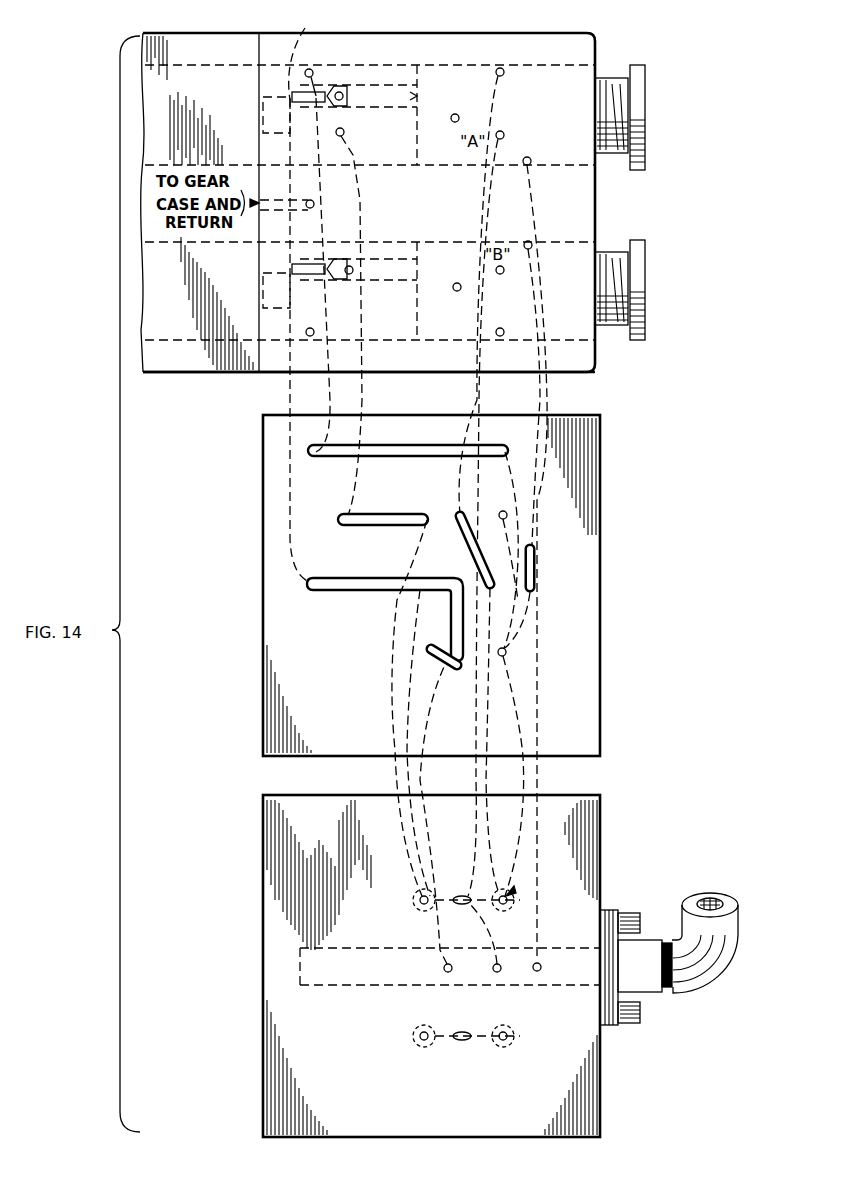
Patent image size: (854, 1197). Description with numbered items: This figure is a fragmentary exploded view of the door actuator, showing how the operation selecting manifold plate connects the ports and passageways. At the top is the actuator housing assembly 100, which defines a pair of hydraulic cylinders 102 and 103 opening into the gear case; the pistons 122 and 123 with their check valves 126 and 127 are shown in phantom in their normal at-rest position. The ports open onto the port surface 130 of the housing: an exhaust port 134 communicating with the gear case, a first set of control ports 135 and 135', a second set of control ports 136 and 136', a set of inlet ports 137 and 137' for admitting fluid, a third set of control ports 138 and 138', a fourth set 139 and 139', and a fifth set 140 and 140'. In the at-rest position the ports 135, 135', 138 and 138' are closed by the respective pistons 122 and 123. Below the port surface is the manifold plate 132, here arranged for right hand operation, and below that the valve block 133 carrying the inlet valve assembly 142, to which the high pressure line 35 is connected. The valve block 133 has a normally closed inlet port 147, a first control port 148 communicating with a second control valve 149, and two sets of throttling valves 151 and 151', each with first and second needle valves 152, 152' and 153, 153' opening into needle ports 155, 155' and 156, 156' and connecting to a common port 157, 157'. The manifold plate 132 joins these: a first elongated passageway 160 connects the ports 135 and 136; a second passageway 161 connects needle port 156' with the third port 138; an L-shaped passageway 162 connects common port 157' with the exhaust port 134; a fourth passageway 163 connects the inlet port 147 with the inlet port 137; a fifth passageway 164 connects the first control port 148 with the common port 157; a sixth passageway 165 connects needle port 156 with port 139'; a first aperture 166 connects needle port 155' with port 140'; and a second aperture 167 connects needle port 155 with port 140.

The actuator housing assembly 100 is at (205, 46).
The check valve 126 is at (313, 54).
The piston 122 is at (390, 62).
The hydraulic cylinder 102 is at (455, 65).
The port surface 130 is at (588, 190).
The manifold plate 132 is at (599, 537).
The valve block 133 is at (600, 812).
The first control port 135 is at (324, 82).
The first control port 135' is at (334, 322).
The second control port 136 is at (521, 66).
The second control port 136' is at (499, 321).
The inlet port 137 is at (548, 149).
The inlet port 137' is at (561, 223).
The third control port 138 is at (362, 125).
The third control port 138' is at (345, 245).
The fourth control port 139 is at (474, 107).
The fourth control port 139' is at (435, 295).
The fifth control port 140 is at (520, 124).
The fifth control port 140' is at (499, 286).
The exhaust port 134 is at (313, 202).
The check valve 127 is at (290, 268).
The hydraulic cylinder 103 is at (290, 330).
The piston 123 is at (306, 340).
The first elongated passageway 160 is at (396, 449).
The second passageway 161 is at (384, 513).
The L-shaped passageway 162 is at (341, 592).
The fourth passageway 163 is at (537, 572).
The fifth passageway 164 is at (461, 512).
The sixth passageway 165 is at (445, 667).
The first aperture 166 is at (506, 652).
The second aperture 167 is at (503, 511).
The inlet port 147 is at (542, 967).
The first control port 148 is at (494, 965).
The second control valve 149 is at (444, 968).
The throttling valve set 151 is at (533, 1043).
The throttling valve set 151' is at (537, 882).
The first needle valve 152 is at (500, 1061).
The first needle valve 152' is at (543, 893).
The second needle valve 153 is at (397, 1048).
The second needle valve 153' is at (406, 890).
The needle port 155 is at (540, 1022).
The needle port 155' is at (582, 873).
The needle port 156 is at (408, 1062).
The needle port 156' is at (395, 908).
The common port 157 is at (458, 1064).
The common port 157' is at (454, 878).
The inlet valve assembly 142 is at (600, 1008).
The high pressure line 35 is at (732, 968).